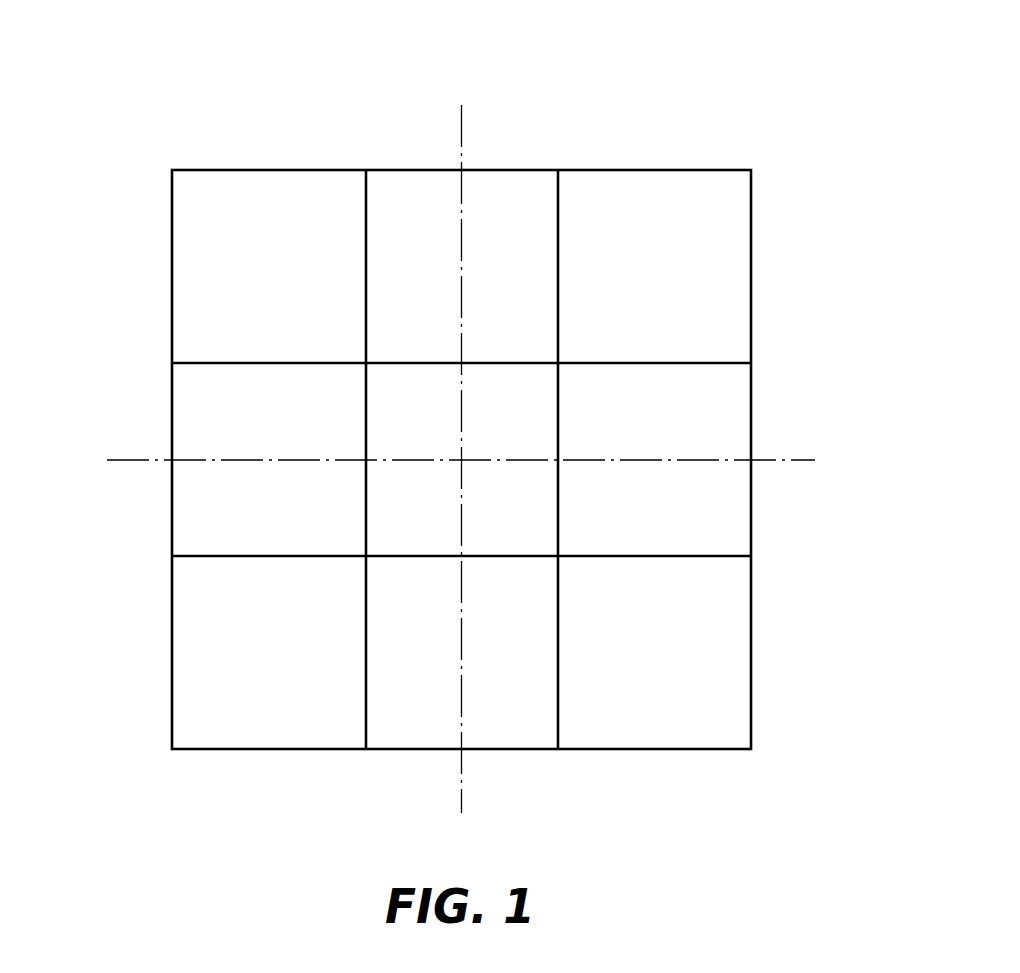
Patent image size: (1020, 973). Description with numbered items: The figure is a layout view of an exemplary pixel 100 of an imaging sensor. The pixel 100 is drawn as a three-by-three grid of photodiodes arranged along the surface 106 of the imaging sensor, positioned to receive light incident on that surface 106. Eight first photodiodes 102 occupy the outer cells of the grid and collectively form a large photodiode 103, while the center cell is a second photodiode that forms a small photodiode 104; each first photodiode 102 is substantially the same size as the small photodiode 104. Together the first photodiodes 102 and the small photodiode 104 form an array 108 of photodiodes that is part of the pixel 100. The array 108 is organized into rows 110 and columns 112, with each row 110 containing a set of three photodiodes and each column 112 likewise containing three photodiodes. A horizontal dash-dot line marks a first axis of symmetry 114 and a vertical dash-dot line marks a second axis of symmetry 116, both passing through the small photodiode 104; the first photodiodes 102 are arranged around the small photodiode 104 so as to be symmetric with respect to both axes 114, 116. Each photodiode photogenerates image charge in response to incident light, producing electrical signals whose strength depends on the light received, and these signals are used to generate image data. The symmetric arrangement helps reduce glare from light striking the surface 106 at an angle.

The pixel 100 is at (760, 133).
The first photodiode 102 is at (492, 207).
The large photodiode 103 is at (136, 103).
The small photodiode 104 is at (495, 368).
The surface of the imaging sensor 106 is at (89, 194).
The array of photodiodes 108 is at (835, 193).
The row 110 is at (802, 291).
The column 112 is at (274, 81).
The first axis of symmetry 114 is at (133, 459).
The second axis of symmetry 116 is at (460, 785).